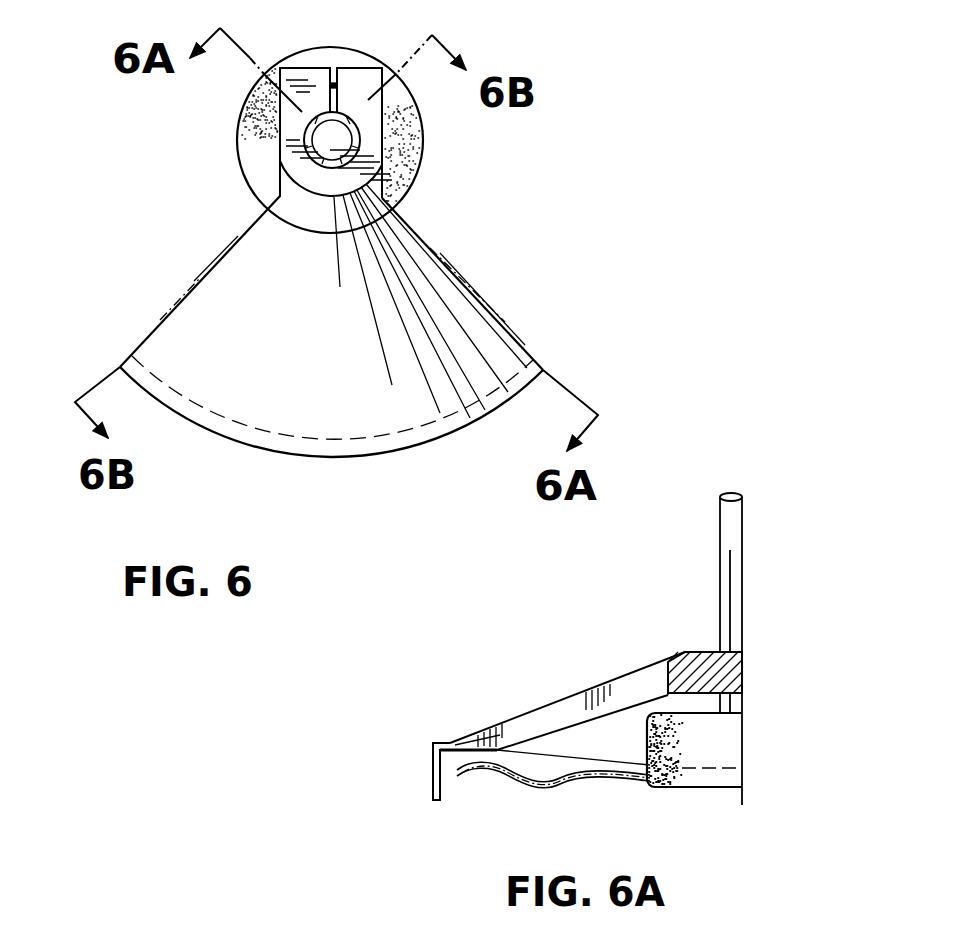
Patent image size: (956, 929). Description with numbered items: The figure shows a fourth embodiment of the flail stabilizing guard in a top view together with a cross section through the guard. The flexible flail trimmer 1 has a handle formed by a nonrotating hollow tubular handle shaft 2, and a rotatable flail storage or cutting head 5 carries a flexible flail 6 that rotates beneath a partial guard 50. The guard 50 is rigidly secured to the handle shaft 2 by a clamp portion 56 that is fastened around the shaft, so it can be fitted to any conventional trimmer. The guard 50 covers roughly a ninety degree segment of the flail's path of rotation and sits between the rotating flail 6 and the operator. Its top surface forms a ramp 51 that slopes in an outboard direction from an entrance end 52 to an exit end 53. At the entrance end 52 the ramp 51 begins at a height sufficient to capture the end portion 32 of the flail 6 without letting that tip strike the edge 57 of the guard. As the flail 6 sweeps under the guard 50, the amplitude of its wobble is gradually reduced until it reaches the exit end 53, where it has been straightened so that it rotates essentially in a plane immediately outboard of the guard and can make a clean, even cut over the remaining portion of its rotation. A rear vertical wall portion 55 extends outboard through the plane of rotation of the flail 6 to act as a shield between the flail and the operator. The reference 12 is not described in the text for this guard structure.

In FIG. 6A, the flexible flail trimmer 1 is at (804, 656).
In FIG. 6, the handle shaft 2 is at (360, 133).
In FIG. 6A, the handle shaft 2 is at (720, 581).
In FIG. 6A, the flail storage or cutting head 5 is at (697, 789).
In FIG. 6A, the flexible flail 6 is at (572, 780).
In FIG. 6, the light module 12 is at (96, 236).
In FIG. 6A, the end portion 32 is at (470, 780).
In FIG. 6, the partial guard 50 is at (277, 462).
In FIG. 6A, the partial guard 50 is at (542, 699).
In FIG. 6A, the ramp 51 is at (433, 768).
In FIG. 6, the entrance end 52 is at (533, 342).
In FIG. 6A, the entrance end 52 is at (475, 758).
In FIG. 6, the exit end 53 is at (125, 347).
In FIG. 6, the rear vertical wall portion 55 is at (466, 425).
In FIG. 6A, the rear vertical wall portion 55 is at (433, 798).
In FIG. 6, the clamp portion 56 is at (358, 68).
In FIG. 6A, the clamp portion 56 is at (703, 652).
In FIG. 6A, the edge 57 is at (460, 738).